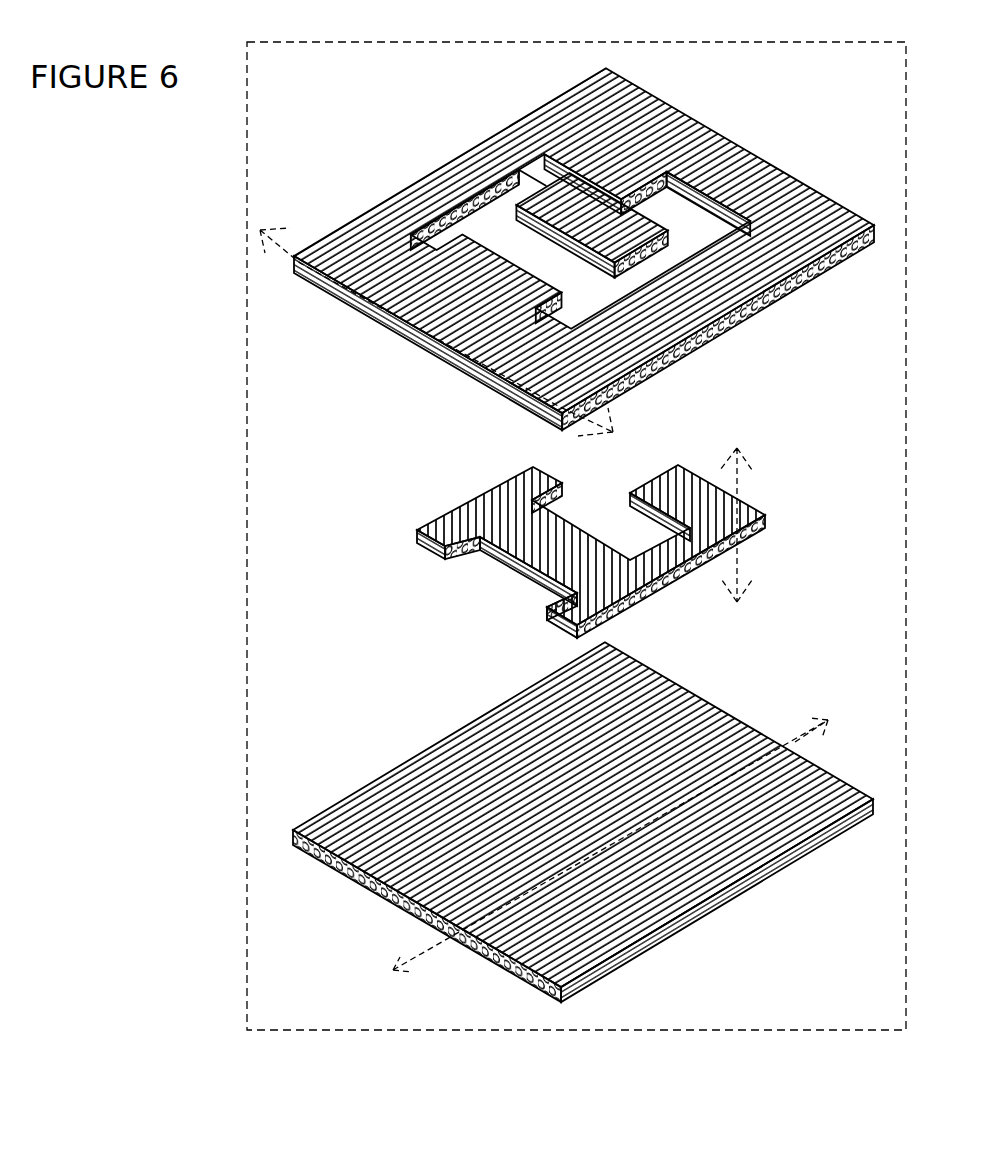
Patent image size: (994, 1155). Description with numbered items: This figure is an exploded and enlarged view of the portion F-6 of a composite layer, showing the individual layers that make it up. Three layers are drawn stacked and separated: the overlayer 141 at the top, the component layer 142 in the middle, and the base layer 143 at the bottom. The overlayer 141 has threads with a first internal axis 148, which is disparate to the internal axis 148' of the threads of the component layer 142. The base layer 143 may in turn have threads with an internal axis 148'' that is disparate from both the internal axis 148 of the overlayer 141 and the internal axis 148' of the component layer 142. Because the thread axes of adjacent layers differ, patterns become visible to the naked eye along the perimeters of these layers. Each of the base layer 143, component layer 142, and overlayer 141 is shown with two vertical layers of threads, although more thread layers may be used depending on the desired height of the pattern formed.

The overlayer 141 is at (788, 172).
The component layer 142 is at (437, 520).
The base layer 143 is at (353, 880).
The first internal axis 148 is at (436, 290).
The internal axis 148' is at (784, 517).
The internal axis 148'' is at (803, 706).
The portion F-6 is at (246, 368).